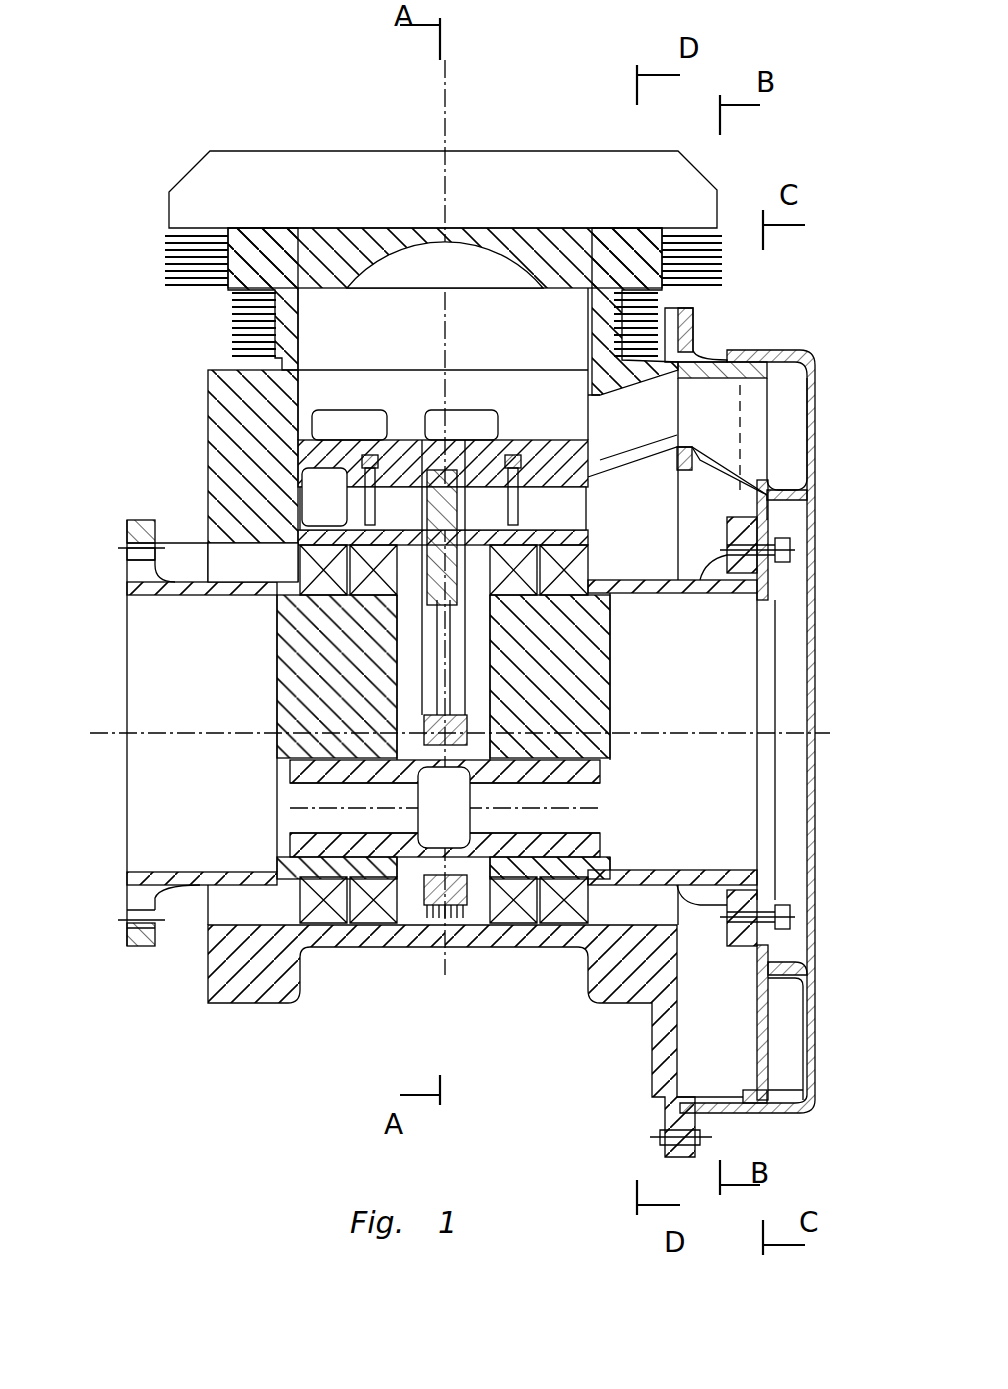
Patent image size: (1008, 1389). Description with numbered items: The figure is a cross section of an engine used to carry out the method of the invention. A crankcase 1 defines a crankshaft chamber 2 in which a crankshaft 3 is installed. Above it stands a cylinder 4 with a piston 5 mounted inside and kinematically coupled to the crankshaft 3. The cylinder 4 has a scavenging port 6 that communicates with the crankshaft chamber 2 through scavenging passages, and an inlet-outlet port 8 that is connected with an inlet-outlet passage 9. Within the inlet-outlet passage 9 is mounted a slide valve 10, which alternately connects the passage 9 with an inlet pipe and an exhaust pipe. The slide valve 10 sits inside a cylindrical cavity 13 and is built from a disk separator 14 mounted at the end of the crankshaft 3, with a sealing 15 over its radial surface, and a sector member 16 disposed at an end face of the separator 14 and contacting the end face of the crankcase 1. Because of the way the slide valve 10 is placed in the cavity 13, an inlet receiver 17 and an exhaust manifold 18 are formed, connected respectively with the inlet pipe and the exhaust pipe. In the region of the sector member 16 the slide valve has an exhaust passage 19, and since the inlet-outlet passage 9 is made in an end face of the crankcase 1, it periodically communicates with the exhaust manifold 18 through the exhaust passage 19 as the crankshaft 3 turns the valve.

The crankcase 1 is at (230, 440).
The crankshaft chamber 2 is at (395, 620).
The crankshaft 3 is at (320, 640).
The cylinder 4 is at (240, 258).
The piston 5 is at (537, 445).
The scavenging port 6 is at (488, 408).
The inlet-outlet port 8 is at (673, 360).
The inlet-outlet passage 9 is at (648, 427).
The slide valve 10 is at (773, 467).
The cylindrical cavity 13 is at (790, 1110).
The disk separator 14 is at (765, 1093).
The sealing 15 is at (800, 1100).
The sector member 16 is at (703, 455).
The inlet receiver 17 is at (690, 1048).
The exhaust manifold 18 is at (790, 1020).
The exhaust passage 19 is at (728, 432).